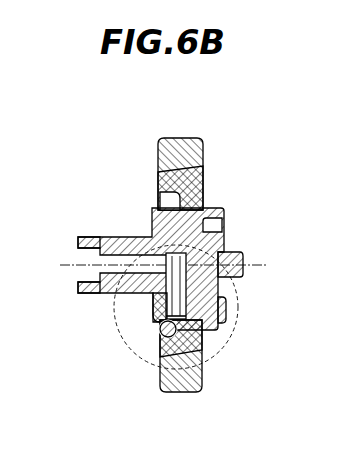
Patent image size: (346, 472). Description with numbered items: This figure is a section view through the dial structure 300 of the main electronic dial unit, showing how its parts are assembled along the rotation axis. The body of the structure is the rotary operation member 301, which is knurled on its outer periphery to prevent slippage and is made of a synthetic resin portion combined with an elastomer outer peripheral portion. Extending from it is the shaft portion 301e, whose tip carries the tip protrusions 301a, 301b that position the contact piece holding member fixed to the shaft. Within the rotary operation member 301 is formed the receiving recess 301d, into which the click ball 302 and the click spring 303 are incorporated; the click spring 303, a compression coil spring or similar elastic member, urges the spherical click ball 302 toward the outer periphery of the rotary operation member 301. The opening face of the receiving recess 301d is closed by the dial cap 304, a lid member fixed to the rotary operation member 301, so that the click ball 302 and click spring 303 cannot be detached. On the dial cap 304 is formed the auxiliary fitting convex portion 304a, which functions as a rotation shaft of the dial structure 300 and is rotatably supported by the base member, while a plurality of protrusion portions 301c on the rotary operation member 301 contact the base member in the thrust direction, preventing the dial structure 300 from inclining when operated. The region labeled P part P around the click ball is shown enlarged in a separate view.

The dial structure 300 is at (161, 262).
The rotary operation member 301 is at (192, 388).
The tip protrusion 301a is at (80, 237).
The tip protrusion 301b is at (80, 291).
The protrusion portion 301c is at (224, 225).
The receiving recess 301d is at (186, 288).
The shaft portion 301e is at (125, 237).
The click ball 302 is at (160, 330).
The click spring 303 is at (152, 298).
The dial cap 304 is at (222, 326).
The auxiliary fitting convex portion 304a is at (245, 261).
The P part P is at (148, 355).